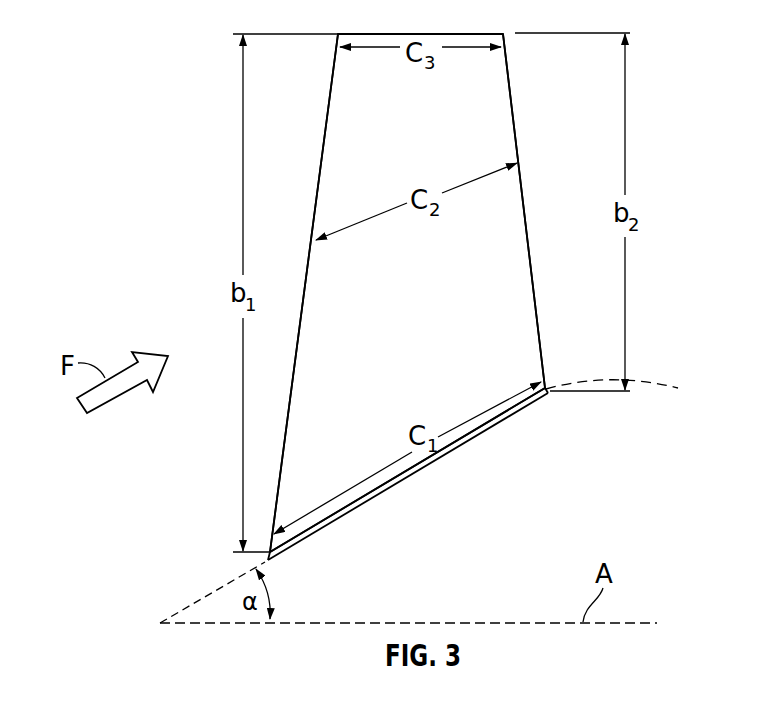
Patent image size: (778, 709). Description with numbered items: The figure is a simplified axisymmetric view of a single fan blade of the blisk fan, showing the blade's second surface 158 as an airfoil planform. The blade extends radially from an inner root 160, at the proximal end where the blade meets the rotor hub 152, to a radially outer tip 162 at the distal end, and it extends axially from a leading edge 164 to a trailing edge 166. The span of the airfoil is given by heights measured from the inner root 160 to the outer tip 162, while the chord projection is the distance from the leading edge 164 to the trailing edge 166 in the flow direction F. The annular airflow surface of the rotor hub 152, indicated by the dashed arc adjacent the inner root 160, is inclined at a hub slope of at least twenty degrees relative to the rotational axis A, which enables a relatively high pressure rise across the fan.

The rotor hub 152 is at (535, 418).
The second surface 158 is at (440, 268).
The inner root 160 is at (394, 479).
The outer tip 162 is at (420, 34).
The leading edge 164 is at (333, 75).
The trailing edge 166 is at (534, 136).